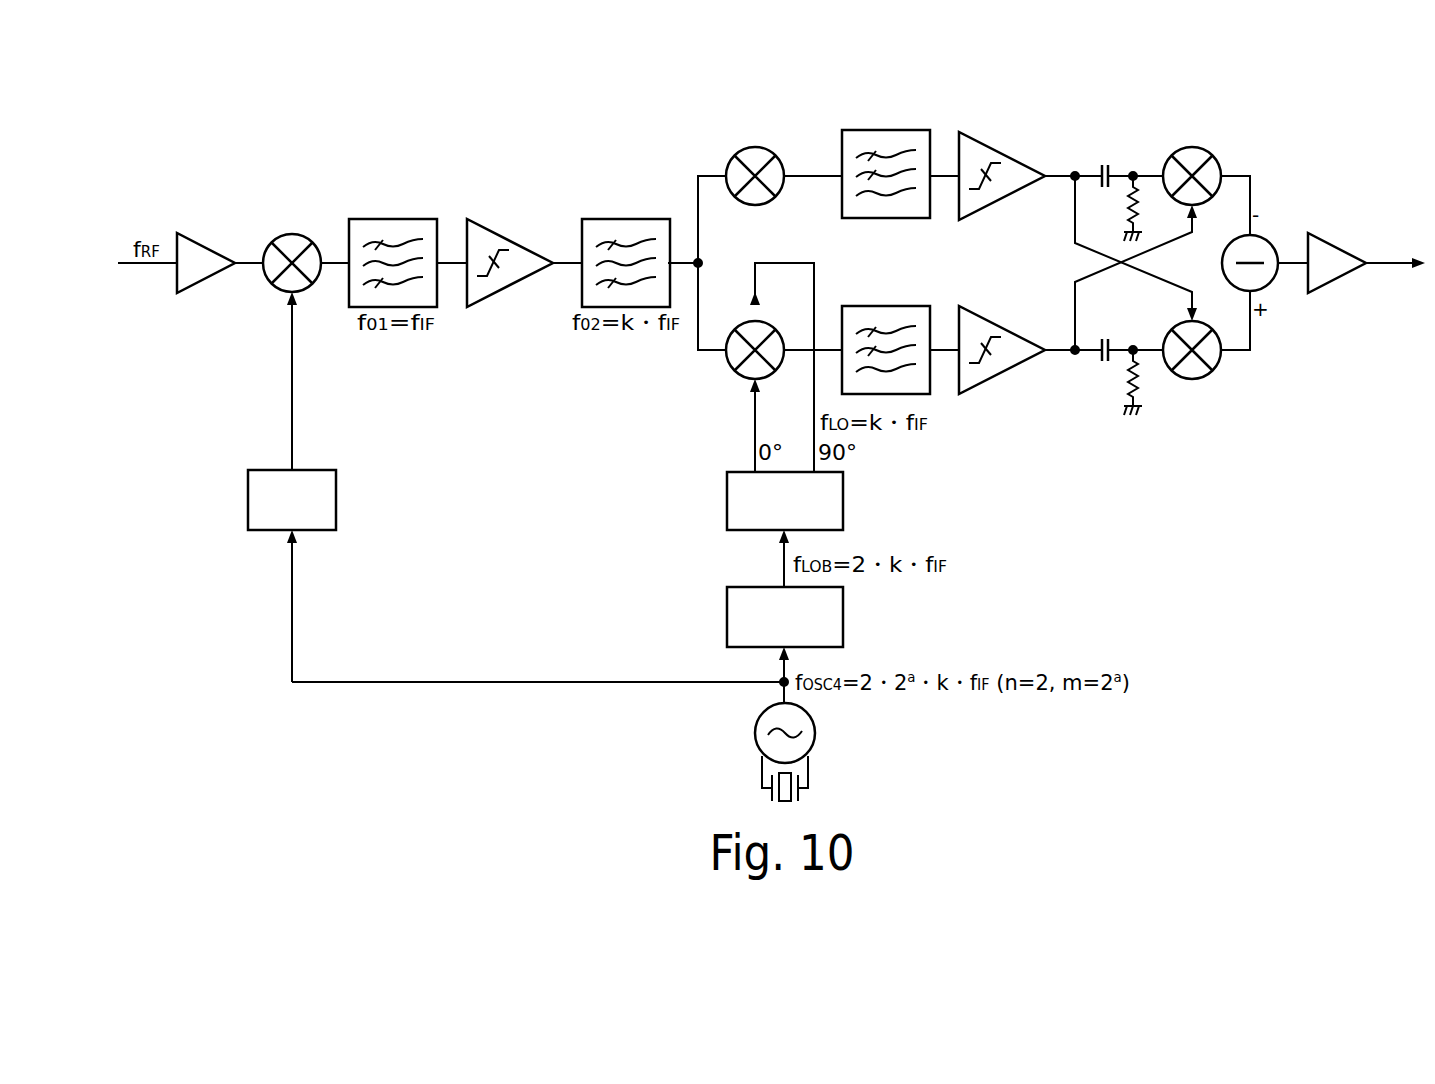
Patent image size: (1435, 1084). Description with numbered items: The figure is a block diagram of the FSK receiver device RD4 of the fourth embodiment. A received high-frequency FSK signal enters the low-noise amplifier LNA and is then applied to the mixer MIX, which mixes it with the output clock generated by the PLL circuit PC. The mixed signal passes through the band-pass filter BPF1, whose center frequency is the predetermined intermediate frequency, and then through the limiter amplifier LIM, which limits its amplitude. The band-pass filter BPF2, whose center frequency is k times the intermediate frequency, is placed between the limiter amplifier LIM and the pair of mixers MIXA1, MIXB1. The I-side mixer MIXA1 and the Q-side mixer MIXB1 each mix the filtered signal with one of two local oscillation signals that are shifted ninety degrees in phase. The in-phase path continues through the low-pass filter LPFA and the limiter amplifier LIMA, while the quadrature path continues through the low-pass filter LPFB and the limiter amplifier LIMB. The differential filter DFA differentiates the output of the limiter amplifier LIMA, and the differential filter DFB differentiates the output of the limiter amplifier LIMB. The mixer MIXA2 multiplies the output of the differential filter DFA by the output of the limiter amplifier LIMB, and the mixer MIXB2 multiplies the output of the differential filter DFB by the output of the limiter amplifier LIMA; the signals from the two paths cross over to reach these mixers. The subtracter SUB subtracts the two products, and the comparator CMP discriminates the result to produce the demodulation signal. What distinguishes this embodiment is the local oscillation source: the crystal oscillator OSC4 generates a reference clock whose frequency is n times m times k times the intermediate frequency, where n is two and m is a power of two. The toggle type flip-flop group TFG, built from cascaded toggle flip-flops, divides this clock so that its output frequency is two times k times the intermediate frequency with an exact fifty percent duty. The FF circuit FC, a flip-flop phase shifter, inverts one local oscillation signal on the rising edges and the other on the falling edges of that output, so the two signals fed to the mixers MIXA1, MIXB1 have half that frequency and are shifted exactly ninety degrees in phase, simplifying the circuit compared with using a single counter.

The FSK receiver device RD4 is at (503, 124).
The low-noise amplifier LNA is at (206, 252).
The mixer MIX is at (292, 252).
The band-pass filter BPF1 is at (393, 248).
The limiter amplifier LIM is at (510, 256).
The band-pass filter BPF2 is at (626, 248).
The mixer MIXA1 is at (755, 163).
The low-pass filter LPFA is at (886, 160).
The limiter amplifier LIMA is at (1002, 167).
The mixer MIXB1 is at (755, 335).
The low-pass filter LPFB is at (886, 334).
The limiter amplifier LIMB is at (1002, 343).
The differential filter DFA is at (1119, 188).
The differential filter DFB is at (1119, 363).
The mixer MIXA2 is at (1192, 162).
The mixer MIXB2 is at (1192, 366).
The subtracter SUB is at (1228, 263).
The comparator CMP is at (1337, 251).
The PLL circuit PC is at (279, 512).
The FF circuit FC is at (771, 516).
The toggle type flip-flop group TFG is at (765, 631).
The crystal oscillator OSC4 is at (810, 752).